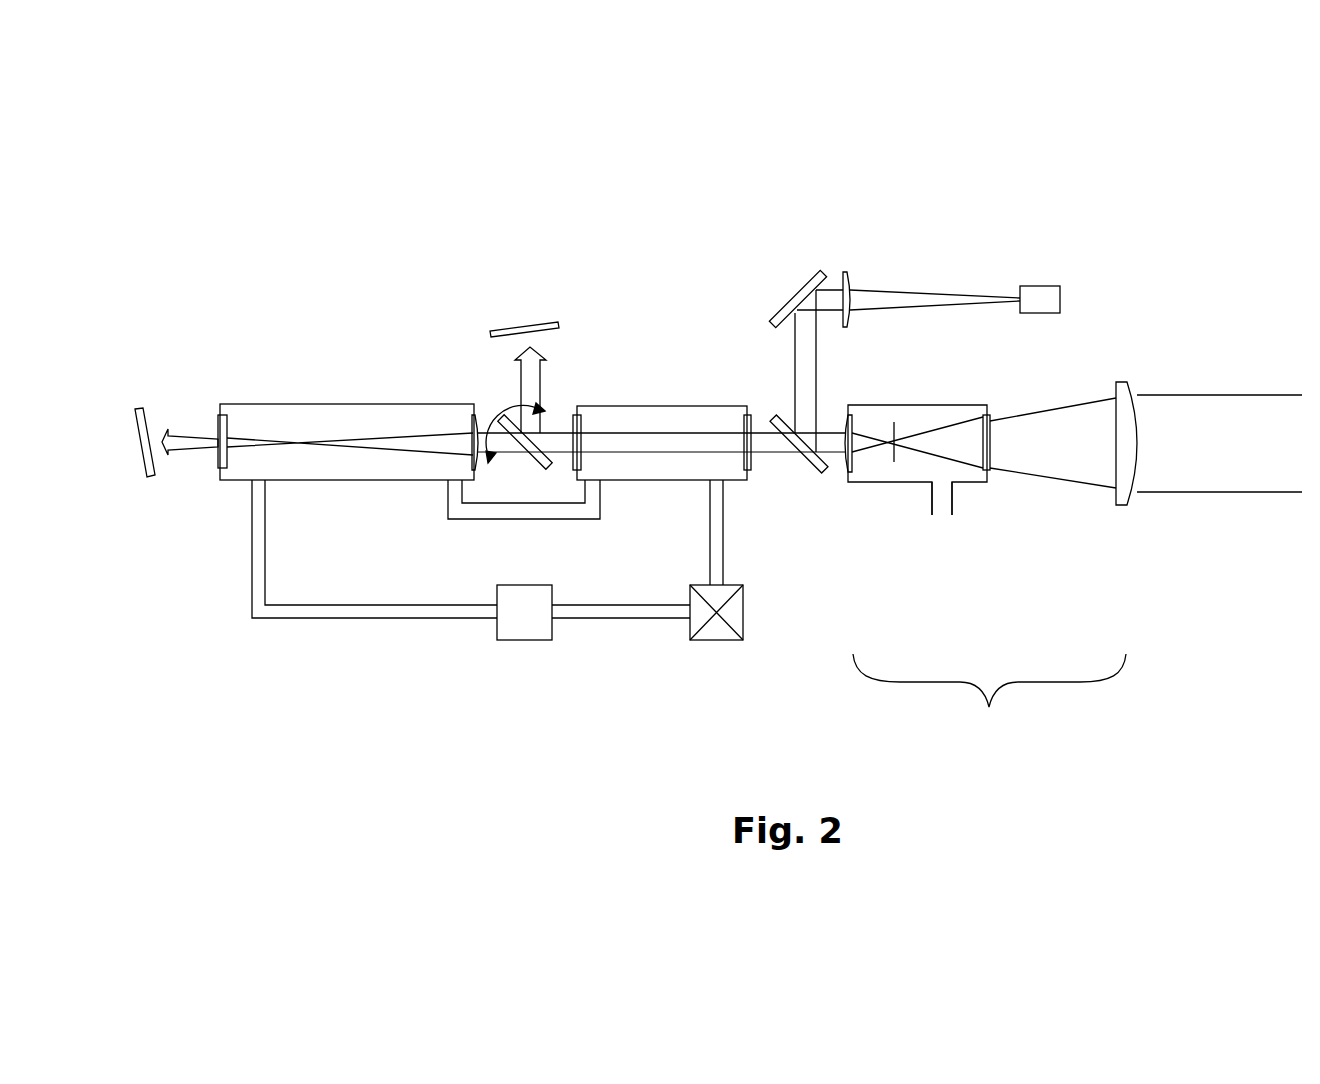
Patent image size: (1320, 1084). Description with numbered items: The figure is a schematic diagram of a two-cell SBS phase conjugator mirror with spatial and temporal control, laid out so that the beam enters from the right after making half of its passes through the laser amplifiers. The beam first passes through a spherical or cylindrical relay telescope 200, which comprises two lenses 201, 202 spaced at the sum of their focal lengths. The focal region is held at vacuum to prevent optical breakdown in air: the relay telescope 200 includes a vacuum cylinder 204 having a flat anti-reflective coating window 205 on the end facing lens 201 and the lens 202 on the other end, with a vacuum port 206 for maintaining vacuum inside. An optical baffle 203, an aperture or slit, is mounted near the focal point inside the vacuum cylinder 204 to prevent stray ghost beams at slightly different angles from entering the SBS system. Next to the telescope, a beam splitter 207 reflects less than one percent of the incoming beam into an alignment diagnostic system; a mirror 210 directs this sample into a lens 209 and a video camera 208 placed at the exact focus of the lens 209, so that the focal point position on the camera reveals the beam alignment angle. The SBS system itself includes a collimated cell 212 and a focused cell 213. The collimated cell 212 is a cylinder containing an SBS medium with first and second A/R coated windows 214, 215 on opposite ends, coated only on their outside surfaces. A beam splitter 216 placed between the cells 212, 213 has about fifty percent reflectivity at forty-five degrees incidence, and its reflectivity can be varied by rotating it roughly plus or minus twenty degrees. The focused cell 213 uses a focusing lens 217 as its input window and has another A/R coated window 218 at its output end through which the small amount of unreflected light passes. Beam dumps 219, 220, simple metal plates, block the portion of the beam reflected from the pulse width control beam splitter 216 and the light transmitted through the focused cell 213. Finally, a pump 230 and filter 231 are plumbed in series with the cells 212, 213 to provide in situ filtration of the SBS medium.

The relay telescope 200 is at (989, 703).
The lens 201 is at (1125, 507).
The lens 202 is at (842, 465).
The optical baffle 203 is at (899, 442).
The vacuum cylinder 204 is at (865, 420).
The anti-reflective coating window 205 is at (990, 418).
The vacuum port 206 is at (955, 498).
The beam splitter 207 is at (805, 465).
The video camera 208 is at (1042, 285).
The lens 209 is at (852, 283).
The mirror 210 is at (790, 302).
The collimated cell 212 is at (725, 422).
The focused cell 213 is at (313, 418).
The first A/R coated window 214 is at (752, 462).
The second A/R coated window 215 is at (580, 419).
The beam splitter 216 is at (550, 458).
The focusing lens 217 is at (483, 417).
The A/R coated window 218 is at (217, 460).
The beam dump 219 is at (523, 326).
The beam dump 220 is at (137, 440).
The pump 230 is at (717, 642).
The filter 231 is at (517, 642).